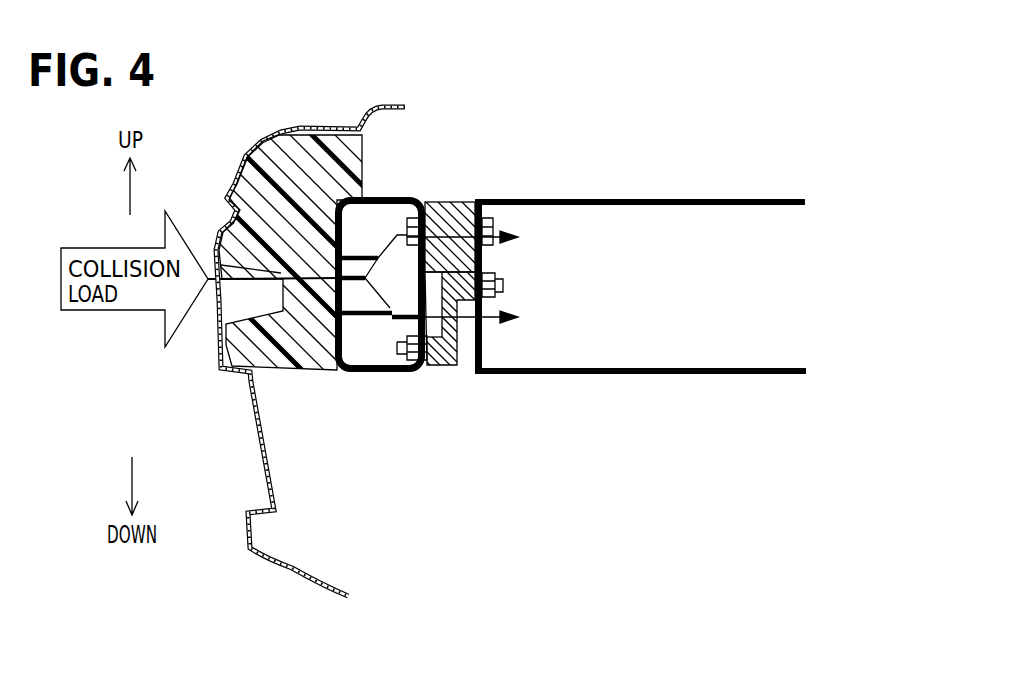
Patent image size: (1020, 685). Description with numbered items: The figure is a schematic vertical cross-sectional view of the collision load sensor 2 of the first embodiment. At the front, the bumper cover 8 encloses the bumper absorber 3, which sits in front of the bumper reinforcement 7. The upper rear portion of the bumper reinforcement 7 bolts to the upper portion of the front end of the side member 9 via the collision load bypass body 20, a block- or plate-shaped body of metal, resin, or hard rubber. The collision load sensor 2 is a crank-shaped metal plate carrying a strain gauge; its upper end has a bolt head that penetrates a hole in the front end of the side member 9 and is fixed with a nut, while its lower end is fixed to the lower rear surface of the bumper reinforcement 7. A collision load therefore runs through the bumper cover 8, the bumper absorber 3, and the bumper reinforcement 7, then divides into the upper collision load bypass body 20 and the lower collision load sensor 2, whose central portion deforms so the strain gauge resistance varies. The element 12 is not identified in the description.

The collision load sensor 2 is at (440, 365).
The bumper absorber 3 is at (278, 355).
The bumper reinforcement 7 is at (370, 373).
The bumper cover 8 is at (289, 566).
The side member 9 is at (710, 374).
The mounting plate 12 is at (483, 212).
The collision load bypass body 20 is at (443, 212).